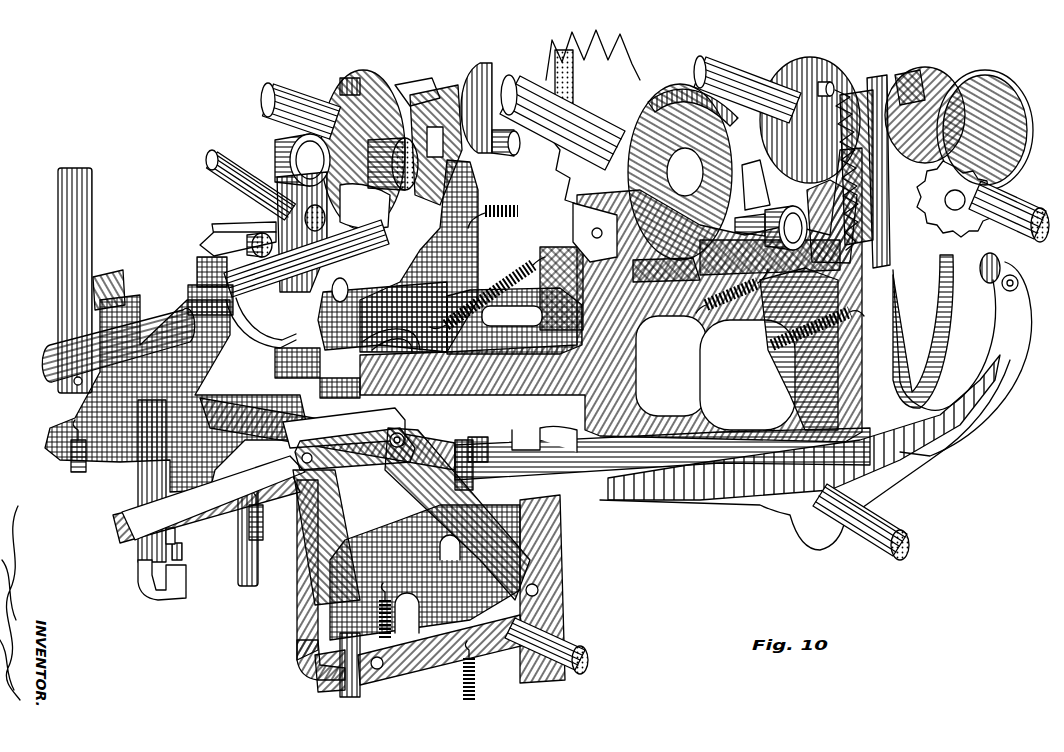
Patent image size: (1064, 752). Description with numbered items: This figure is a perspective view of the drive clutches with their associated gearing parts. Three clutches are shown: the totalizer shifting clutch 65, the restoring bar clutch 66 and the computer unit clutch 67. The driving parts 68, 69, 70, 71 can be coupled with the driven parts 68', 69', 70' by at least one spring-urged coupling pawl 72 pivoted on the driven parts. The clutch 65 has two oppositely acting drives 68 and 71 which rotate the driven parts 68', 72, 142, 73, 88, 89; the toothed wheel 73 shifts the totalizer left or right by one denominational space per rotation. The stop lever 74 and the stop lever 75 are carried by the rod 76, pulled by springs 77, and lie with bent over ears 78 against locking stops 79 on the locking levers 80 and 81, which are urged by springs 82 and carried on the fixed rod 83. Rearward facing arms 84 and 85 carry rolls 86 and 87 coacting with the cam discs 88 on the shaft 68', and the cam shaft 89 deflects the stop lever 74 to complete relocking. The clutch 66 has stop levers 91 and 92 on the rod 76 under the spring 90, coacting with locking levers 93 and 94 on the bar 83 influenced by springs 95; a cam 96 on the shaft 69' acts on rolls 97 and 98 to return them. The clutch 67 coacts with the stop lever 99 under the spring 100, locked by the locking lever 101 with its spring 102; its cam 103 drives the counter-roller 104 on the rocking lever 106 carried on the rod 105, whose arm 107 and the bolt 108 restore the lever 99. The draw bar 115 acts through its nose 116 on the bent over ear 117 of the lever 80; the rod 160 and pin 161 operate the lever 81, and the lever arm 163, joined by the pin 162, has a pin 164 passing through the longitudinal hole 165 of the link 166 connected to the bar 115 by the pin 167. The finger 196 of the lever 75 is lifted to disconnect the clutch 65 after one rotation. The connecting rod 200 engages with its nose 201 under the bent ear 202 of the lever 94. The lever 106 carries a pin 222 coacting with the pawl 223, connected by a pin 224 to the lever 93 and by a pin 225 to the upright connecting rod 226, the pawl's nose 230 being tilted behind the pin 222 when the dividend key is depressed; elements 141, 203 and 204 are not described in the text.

The totalizer shifting clutch 65 is at (840, 151).
The restoring bar clutch 66 is at (680, 150).
The computer unit clutch 67 is at (363, 137).
The driving part 68 is at (1010, 196).
The driven shaft 68' is at (747, 81).
The driving part 69 is at (598, 117).
The driven shaft 69' is at (562, 104).
The driving part 70 is at (301, 94).
The driven part 70' is at (393, 153).
The driving part 71 is at (878, 74).
The coupling pawl 72 is at (336, 90).
The toothed wheel 73 is at (937, 78).
The stop lever 74 is at (770, 395).
The stop lever 75 is at (905, 455).
The rod 76 is at (893, 520).
The springs 77 is at (757, 349).
The bent over ears 78 is at (189, 292).
The locking stops 79 is at (198, 265).
The locking lever 80 is at (425, 548).
The locking lever 81 is at (556, 580).
The springs 82 is at (392, 612).
The fixed rod 83 is at (576, 648).
The rearward facing arm 84 is at (926, 356).
The rearward facing arm 85 is at (1003, 338).
The roll 86 is at (985, 286).
The roll 87 is at (1018, 277).
The cam discs 88 is at (1018, 124).
The cam shaft 89 is at (905, 76).
The spring 90 is at (512, 286).
The stop lever 91 is at (560, 316).
The stop lever 92 is at (637, 350).
The locking lever 93 is at (278, 434).
The locking lever 94 is at (243, 535).
The springs 95 is at (167, 541).
The cam 96 is at (700, 104).
The roll 97 is at (572, 212).
The roll 98 is at (745, 178).
The stop lever 99 is at (470, 195).
The spring 100 is at (498, 222).
The locking lever 101 is at (205, 422).
The spring 102 is at (72, 470).
The cam 103 is at (392, 88).
The counter-roller 104 is at (283, 156).
The rod 105 is at (220, 156).
The rocking lever 106 is at (277, 213).
The arm 107 is at (212, 240).
The bolt 108 is at (247, 247).
The draw bar 115 is at (298, 590).
The nose 116 is at (318, 678).
The bent over ear 117 is at (300, 637).
The pin 141 is at (824, 82).
The driven part 142 is at (797, 84).
The upwardly inclined rod 160 is at (360, 688).
The pin 161 is at (441, 653).
The pin 162 is at (555, 560).
The lever arm 163 is at (398, 493).
The pin 164 is at (405, 440).
The longitudinal hole 165 is at (375, 458).
The link 166 is at (365, 428).
The pin 167 is at (326, 537).
The finger 196 is at (528, 430).
The connecting rod 200 is at (146, 443).
The nose 201 is at (168, 594).
The bent ear 202 is at (183, 553).
The half disc 203 is at (477, 82).
The pin 204 is at (511, 157).
The pin 222 is at (382, 315).
The pawl 223 is at (230, 228).
The pin 224 is at (258, 318).
The pin 225 is at (66, 386).
The upright connecting rod 226 is at (92, 194).
The nose 230 is at (395, 215).